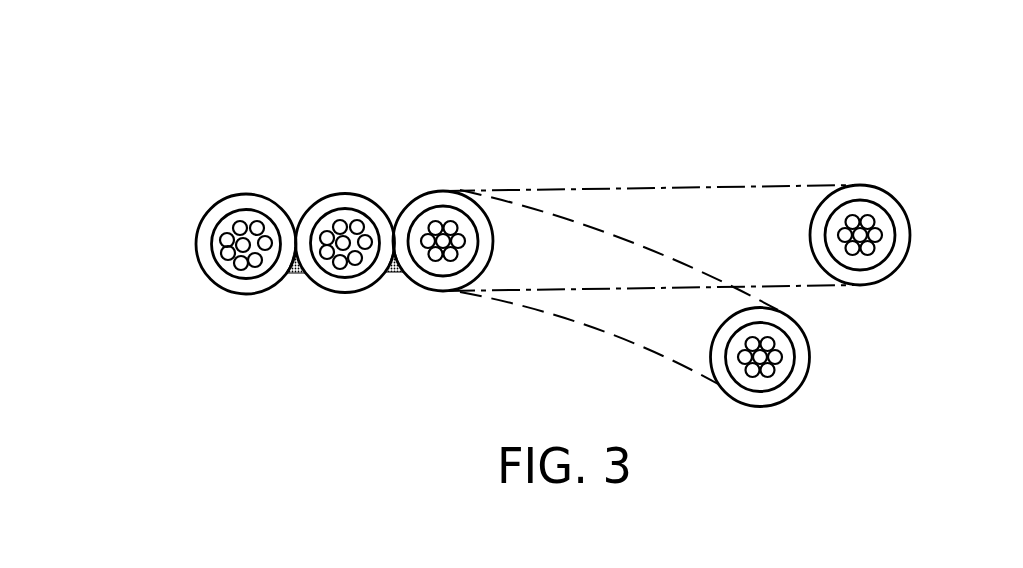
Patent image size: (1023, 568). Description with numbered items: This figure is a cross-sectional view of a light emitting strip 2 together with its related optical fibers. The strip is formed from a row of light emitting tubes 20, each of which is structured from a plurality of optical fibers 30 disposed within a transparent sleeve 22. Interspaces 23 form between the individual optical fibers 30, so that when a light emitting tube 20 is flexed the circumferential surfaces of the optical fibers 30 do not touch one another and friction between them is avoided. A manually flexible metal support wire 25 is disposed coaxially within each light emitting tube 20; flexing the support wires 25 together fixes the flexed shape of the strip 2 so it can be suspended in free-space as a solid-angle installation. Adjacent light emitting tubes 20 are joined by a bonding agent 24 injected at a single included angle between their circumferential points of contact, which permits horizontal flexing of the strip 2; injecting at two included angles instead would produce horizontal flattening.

The flat cable 2 is at (656, 187).
The light emitting tube 20 is at (198, 233).
The transparent sleeve 22 is at (874, 197).
The interspace 23 is at (228, 223).
The bonding agent 24 is at (293, 268).
The metal support wire 25 is at (262, 238).
The optical fiber 30 is at (230, 251).